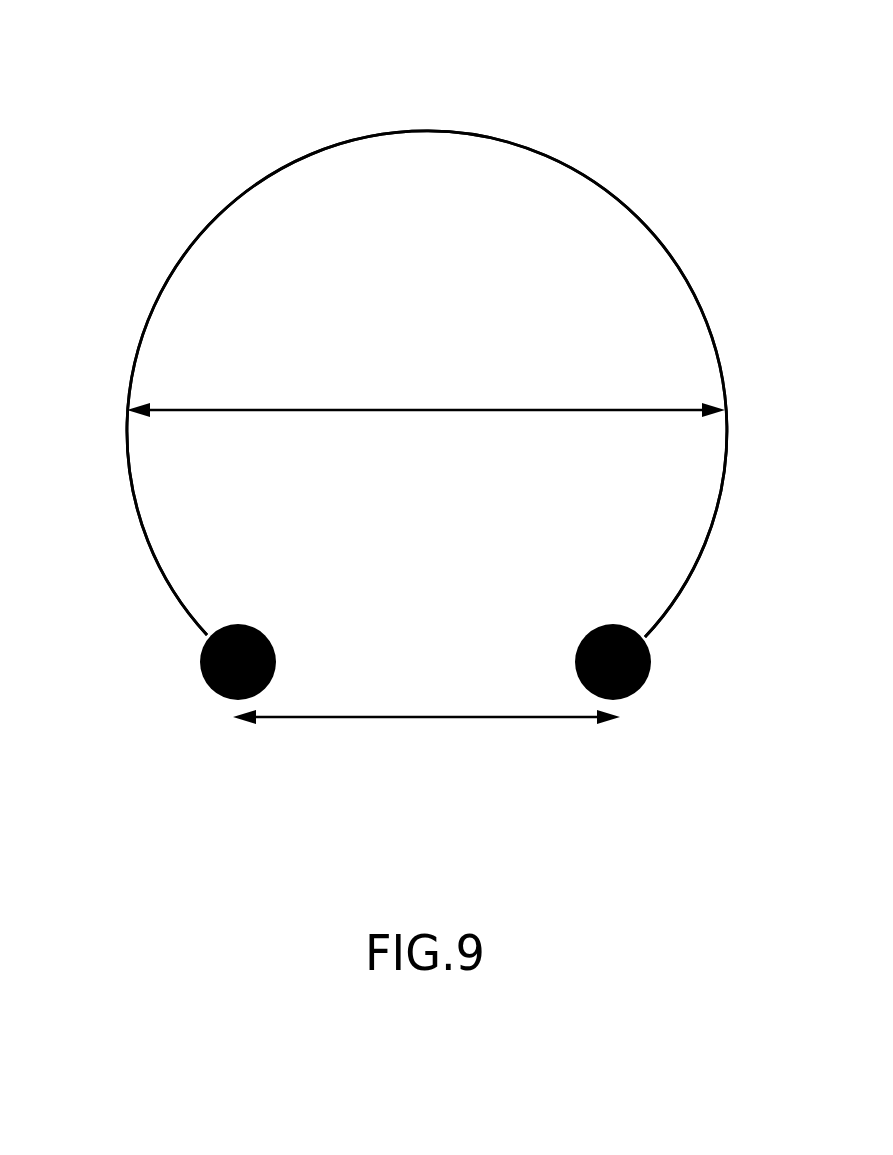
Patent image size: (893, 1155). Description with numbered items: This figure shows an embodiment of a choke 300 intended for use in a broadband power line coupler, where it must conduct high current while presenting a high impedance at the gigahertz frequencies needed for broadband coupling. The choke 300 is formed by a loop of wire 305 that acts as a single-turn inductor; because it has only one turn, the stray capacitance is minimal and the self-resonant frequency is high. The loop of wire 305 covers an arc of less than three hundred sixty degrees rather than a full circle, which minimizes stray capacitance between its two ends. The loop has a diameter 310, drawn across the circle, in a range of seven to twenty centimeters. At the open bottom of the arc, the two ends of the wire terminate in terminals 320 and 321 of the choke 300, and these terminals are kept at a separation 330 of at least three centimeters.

The choke 300 is at (128, 300).
The loop of wire 305 is at (595, 185).
The diameter 310 is at (417, 410).
The terminal 320 is at (180, 705).
The terminal 321 is at (650, 714).
The separation 330 is at (433, 717).